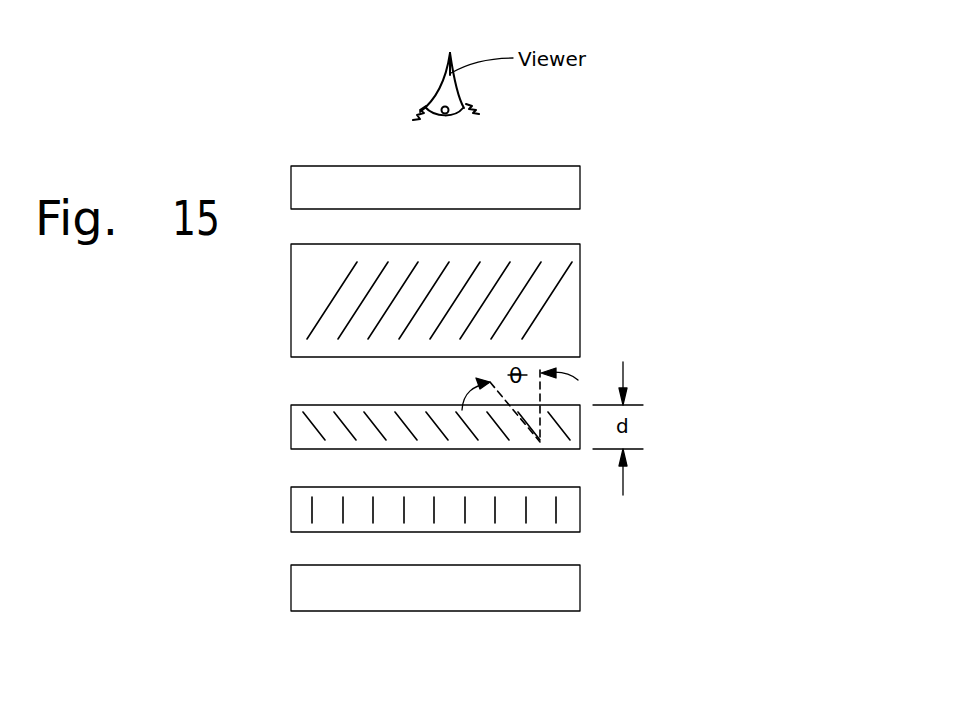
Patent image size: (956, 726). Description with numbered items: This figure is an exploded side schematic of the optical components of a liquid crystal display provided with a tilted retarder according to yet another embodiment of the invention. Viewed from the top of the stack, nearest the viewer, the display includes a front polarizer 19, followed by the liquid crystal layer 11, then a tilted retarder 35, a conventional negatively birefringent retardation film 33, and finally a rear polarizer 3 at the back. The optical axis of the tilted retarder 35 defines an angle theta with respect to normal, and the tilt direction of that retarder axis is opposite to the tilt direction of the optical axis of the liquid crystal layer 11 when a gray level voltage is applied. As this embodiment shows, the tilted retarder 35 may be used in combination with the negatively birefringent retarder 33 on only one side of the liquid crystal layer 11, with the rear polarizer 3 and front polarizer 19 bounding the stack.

The front polarizer 19 is at (572, 185).
The liquid crystal layer 11 is at (575, 309).
The tilted retarder 35 is at (300, 427).
The negatively birefringent retardation film 33 is at (300, 510).
The rear polarizer 3 is at (548, 583).